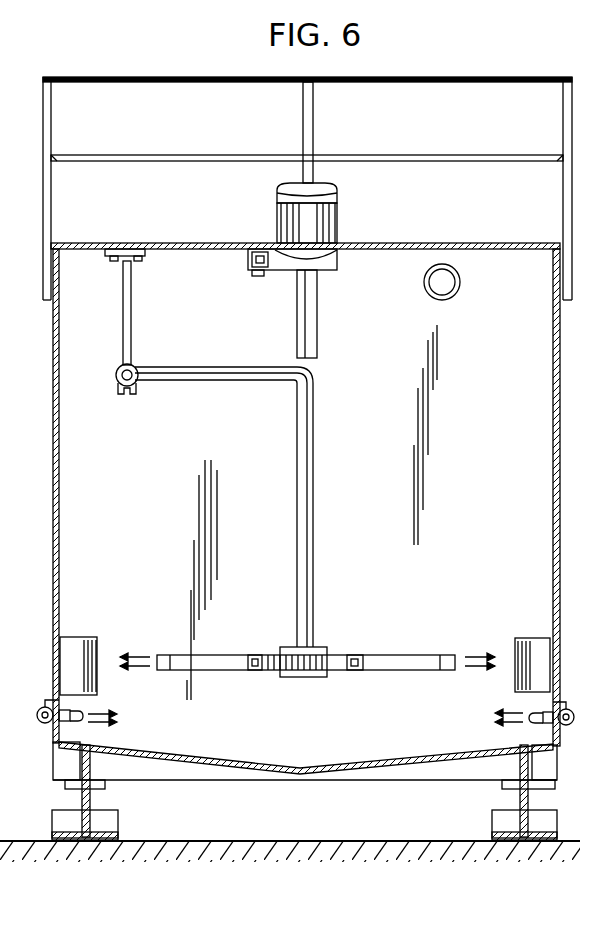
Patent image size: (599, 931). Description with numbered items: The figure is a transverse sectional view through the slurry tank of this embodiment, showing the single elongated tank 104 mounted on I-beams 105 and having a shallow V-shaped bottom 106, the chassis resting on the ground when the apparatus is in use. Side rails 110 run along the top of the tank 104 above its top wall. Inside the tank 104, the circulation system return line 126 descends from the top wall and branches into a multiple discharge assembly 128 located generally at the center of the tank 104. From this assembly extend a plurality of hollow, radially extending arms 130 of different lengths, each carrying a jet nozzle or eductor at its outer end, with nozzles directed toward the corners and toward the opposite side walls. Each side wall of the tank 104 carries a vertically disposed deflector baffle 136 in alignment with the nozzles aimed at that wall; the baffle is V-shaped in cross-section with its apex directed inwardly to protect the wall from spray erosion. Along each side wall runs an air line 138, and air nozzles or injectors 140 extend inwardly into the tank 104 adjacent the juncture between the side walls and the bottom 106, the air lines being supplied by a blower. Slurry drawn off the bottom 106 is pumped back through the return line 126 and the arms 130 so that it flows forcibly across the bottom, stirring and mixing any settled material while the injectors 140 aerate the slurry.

The tank 104 is at (60, 516).
The I-beams 105 is at (92, 800).
The shallow V-shaped bottom 106 is at (212, 757).
The side rails 110 is at (443, 157).
The return line 126 is at (305, 447).
The multiple discharge assembly 128 is at (341, 651).
The radially extending arms 130 is at (398, 660).
The deflector baffle 136 is at (88, 637).
The air line 138 is at (42, 718).
The air nozzles or injectors 140 is at (528, 722).